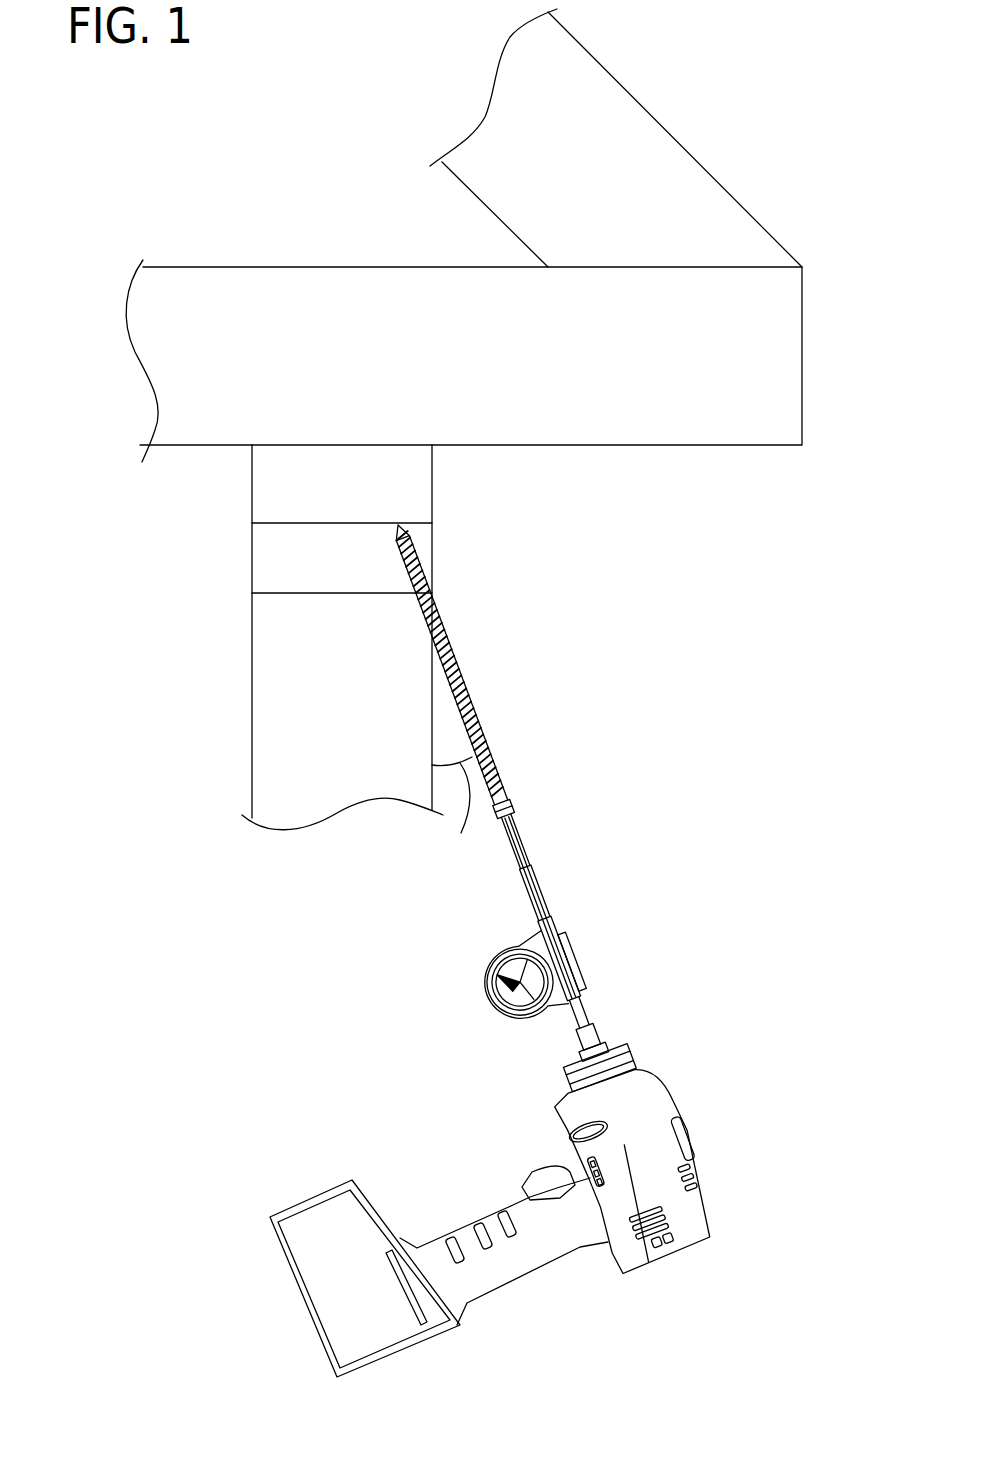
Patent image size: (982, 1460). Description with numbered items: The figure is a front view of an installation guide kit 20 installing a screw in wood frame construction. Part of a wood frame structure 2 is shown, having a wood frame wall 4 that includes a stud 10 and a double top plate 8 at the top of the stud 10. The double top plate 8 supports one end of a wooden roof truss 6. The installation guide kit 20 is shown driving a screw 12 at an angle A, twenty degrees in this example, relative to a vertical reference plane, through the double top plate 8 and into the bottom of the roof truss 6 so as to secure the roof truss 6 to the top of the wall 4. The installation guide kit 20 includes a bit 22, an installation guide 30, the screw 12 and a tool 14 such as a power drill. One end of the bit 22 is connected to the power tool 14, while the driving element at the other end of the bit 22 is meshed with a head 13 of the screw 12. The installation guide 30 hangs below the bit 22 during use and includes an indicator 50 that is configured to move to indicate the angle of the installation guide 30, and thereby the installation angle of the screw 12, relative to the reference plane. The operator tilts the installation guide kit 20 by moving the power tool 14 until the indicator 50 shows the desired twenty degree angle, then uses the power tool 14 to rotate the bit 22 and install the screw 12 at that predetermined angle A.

The wood frame structure 2 is at (272, 138).
The roof truss 6 is at (773, 320).
The wall 4 is at (255, 637).
The double top plate 8 is at (272, 557).
The stud 10 is at (287, 738).
The screw 12 is at (449, 664).
The head 13 is at (504, 808).
The angle A is at (452, 809).
The installation guide kit 20 is at (556, 940).
The bit 22 is at (548, 919).
The installation guide 30 is at (521, 979).
The indicator 50 is at (520, 982).
The tool 14 is at (629, 1141).